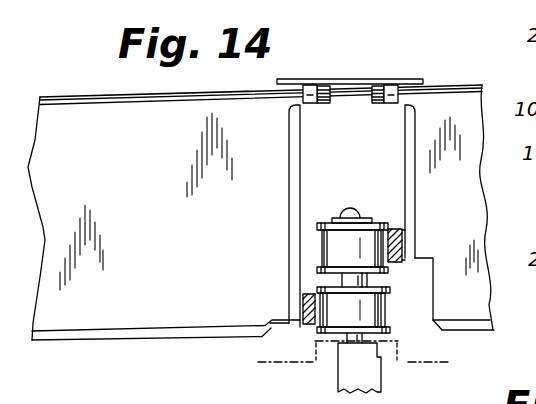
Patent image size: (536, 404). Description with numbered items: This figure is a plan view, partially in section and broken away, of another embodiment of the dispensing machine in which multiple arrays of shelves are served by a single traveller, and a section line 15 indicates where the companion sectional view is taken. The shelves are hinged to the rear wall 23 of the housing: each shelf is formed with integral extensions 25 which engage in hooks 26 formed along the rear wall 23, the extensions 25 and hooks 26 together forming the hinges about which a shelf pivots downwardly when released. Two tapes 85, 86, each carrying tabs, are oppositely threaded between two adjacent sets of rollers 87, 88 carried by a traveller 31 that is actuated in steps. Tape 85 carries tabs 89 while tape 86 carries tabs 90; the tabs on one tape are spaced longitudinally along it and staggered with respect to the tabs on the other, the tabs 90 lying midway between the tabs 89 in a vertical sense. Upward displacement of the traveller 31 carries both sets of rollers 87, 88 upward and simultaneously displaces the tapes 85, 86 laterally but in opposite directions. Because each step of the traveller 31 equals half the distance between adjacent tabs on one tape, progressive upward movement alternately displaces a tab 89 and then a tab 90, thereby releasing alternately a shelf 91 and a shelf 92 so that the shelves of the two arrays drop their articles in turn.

The rear wall 23 is at (357, 79).
The integral extensions 25 is at (373, 95).
The hooks 26 is at (390, 103).
The traveller 31 is at (353, 375).
The section line 15- 15 is at (233, 341).
The tape 85 is at (304, 300).
The tape 86 is at (403, 233).
The rollers 87 is at (367, 307).
The rollers 88 is at (379, 223).
The tabs 89 is at (306, 312).
The tabs 90 is at (404, 245).
The shelf 91 is at (167, 317).
The shelf 92 is at (477, 213).